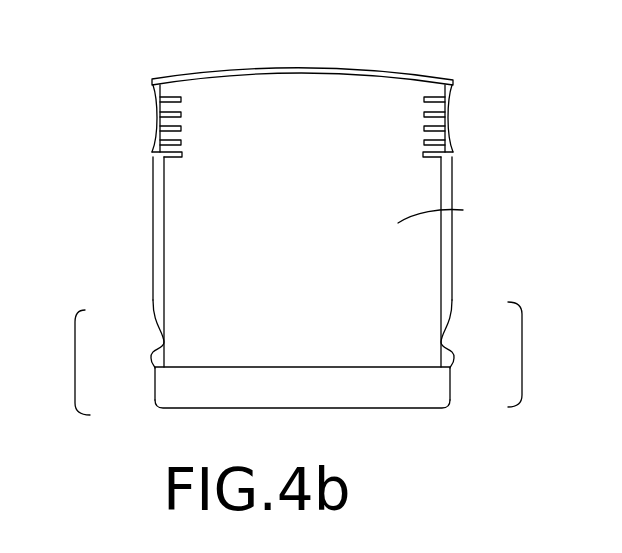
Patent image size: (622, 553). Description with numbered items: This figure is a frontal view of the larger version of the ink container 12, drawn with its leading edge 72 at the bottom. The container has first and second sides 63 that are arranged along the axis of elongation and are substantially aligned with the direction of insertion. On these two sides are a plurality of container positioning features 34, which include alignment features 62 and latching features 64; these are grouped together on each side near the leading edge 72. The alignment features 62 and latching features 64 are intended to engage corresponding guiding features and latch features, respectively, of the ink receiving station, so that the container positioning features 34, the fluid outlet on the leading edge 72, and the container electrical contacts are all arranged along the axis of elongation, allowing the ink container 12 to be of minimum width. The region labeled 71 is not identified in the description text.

The ink container 12 is at (253, 66).
The first and second sides 63 is at (157, 230).
The interior cavity 71 is at (452, 206).
The latching features 64 is at (152, 350).
The alignment features 62 is at (155, 388).
The leading edge 72 is at (212, 412).
The container positioning features 34 is at (75, 355).